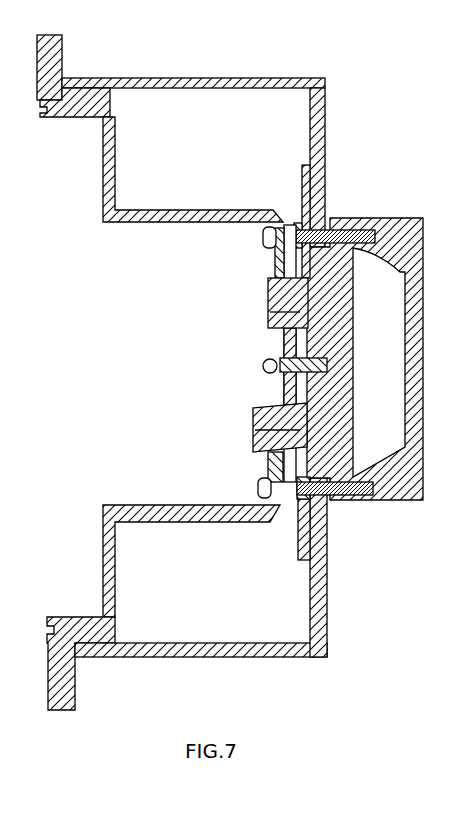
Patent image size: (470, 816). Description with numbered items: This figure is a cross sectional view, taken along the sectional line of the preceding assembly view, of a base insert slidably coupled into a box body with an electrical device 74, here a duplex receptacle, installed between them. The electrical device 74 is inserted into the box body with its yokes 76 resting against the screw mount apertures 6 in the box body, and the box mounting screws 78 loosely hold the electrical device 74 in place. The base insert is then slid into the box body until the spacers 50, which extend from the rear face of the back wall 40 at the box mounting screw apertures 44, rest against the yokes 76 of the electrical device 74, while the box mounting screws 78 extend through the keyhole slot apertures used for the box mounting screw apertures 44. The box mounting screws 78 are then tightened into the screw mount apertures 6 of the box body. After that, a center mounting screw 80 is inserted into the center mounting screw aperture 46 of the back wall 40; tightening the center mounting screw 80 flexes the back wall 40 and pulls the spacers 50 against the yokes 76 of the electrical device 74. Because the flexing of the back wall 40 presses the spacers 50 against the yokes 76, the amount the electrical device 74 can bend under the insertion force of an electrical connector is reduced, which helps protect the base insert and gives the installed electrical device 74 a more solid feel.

The screw mount aperture 6 is at (318, 228).
The back wall 40 is at (283, 345).
The box mounting screw aperture 44 is at (291, 225).
The center mounting screw aperture 46 is at (283, 378).
The spacer 50 is at (280, 250).
The electrical device 74 is at (267, 300).
The yoke 76 is at (308, 196).
The box mounting screw 78 is at (263, 234).
The center mounting screw 80 is at (263, 369).